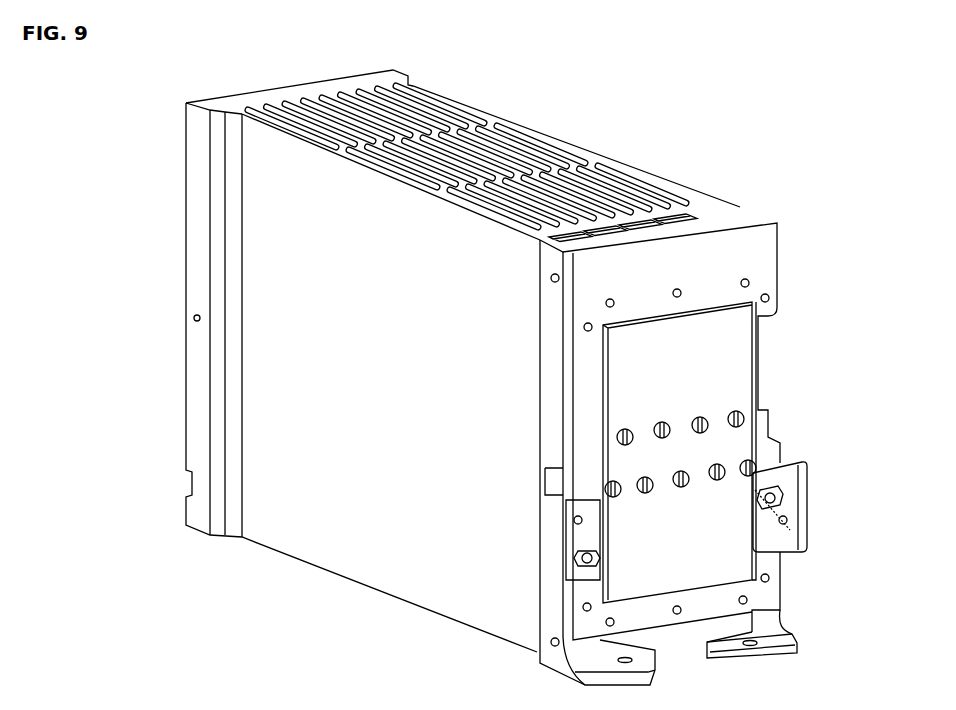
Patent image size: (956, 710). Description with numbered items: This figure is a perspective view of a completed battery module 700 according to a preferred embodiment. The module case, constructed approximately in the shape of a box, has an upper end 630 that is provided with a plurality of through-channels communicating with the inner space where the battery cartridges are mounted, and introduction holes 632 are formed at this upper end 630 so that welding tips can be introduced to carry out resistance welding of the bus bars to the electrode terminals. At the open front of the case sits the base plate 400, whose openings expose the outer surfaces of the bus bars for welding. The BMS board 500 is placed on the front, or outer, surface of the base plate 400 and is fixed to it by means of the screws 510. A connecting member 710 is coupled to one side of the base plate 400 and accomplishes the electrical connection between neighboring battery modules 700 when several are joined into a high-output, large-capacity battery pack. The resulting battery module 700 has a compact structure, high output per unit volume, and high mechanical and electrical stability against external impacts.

The battery module 700 is at (149, 114).
The upper end 630 is at (587, 160).
The introduction holes 632 is at (682, 223).
The base plate 400 is at (572, 350).
The BMS board 500 is at (748, 350).
The screws 510 is at (617, 434).
The connecting member 710 is at (805, 474).